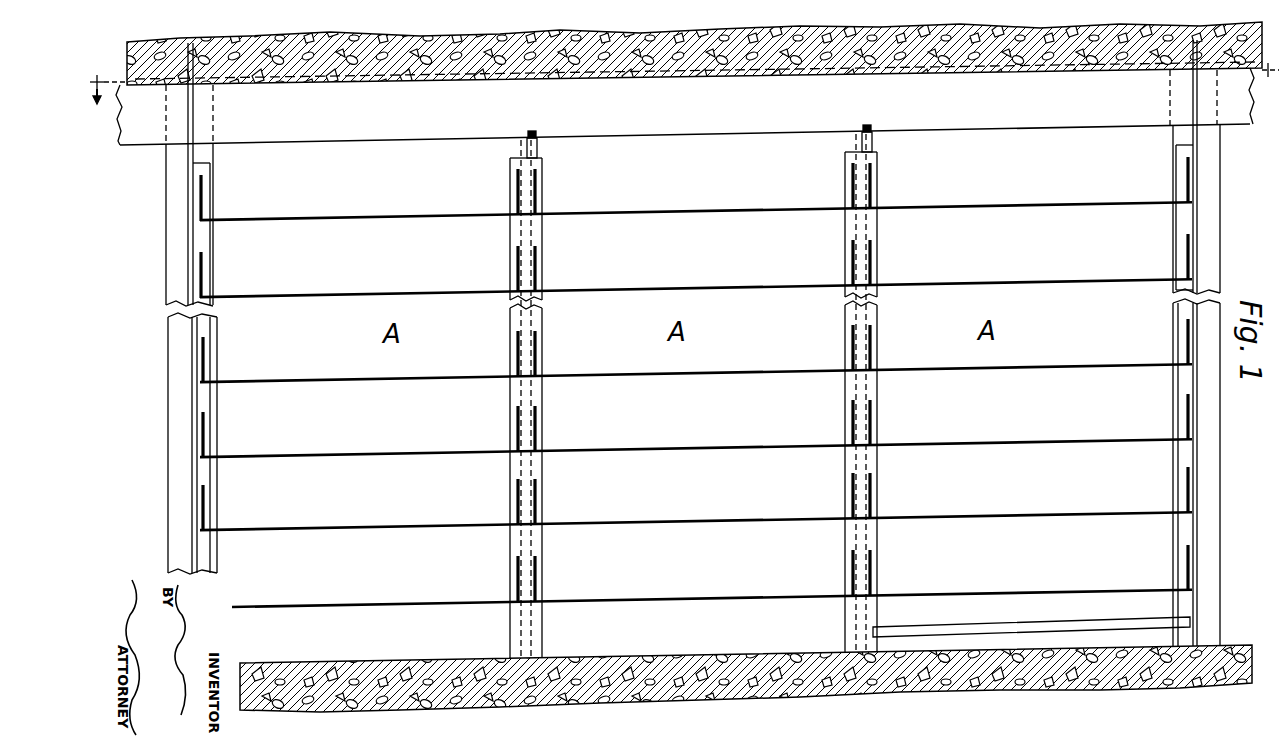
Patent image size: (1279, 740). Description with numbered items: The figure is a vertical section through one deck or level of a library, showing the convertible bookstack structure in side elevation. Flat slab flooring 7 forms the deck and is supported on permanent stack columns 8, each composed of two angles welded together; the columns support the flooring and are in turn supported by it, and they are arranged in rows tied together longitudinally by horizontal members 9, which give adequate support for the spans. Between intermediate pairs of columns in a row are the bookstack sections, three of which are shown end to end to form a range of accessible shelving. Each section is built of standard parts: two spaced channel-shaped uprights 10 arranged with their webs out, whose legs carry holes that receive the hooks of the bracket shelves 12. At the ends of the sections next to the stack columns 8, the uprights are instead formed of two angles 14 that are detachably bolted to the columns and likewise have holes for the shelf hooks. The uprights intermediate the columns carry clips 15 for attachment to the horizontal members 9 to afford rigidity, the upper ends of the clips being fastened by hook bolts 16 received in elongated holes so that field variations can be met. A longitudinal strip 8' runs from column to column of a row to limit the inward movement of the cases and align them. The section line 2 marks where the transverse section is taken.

The section line 2- 2 is at (684, 94).
The flat slab flooring 7 is at (417, 690).
The stack column 8 is at (690, 343).
The longitudinal strip 8' is at (1031, 617).
The horizontal member 9 is at (685, 106).
The upright 10 is at (542, 553).
The bracket shelf 12 is at (694, 520).
The angle 14 is at (215, 498).
The clip 15 is at (537, 148).
The hook bolt 16 is at (536, 133).